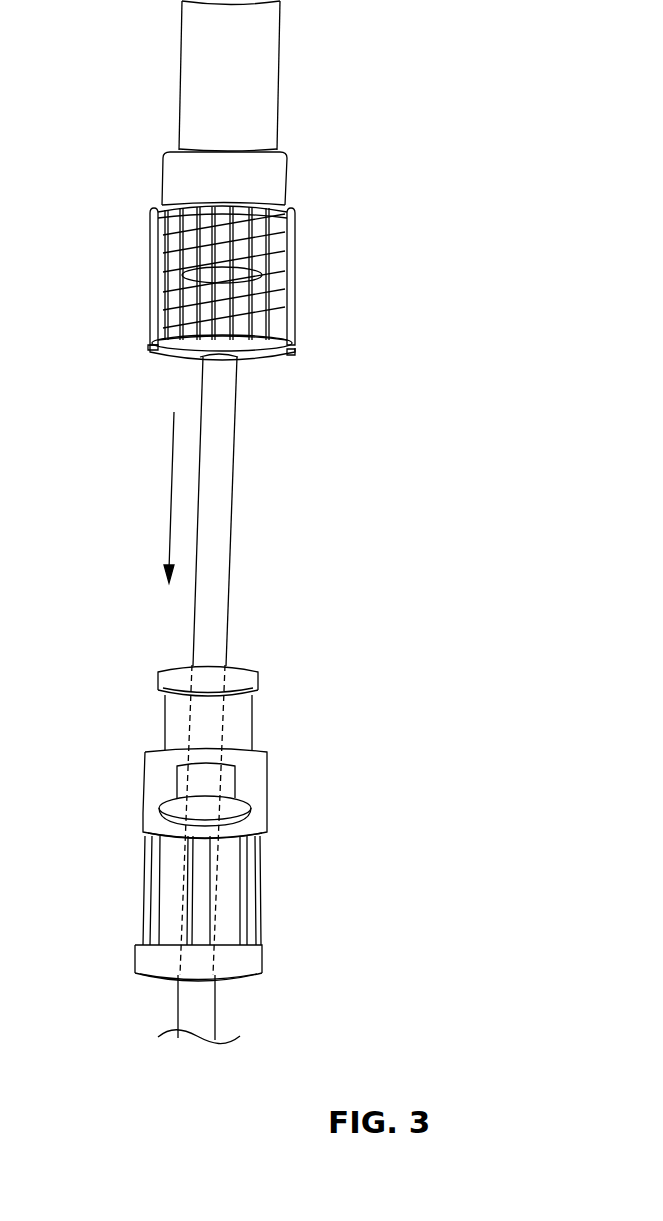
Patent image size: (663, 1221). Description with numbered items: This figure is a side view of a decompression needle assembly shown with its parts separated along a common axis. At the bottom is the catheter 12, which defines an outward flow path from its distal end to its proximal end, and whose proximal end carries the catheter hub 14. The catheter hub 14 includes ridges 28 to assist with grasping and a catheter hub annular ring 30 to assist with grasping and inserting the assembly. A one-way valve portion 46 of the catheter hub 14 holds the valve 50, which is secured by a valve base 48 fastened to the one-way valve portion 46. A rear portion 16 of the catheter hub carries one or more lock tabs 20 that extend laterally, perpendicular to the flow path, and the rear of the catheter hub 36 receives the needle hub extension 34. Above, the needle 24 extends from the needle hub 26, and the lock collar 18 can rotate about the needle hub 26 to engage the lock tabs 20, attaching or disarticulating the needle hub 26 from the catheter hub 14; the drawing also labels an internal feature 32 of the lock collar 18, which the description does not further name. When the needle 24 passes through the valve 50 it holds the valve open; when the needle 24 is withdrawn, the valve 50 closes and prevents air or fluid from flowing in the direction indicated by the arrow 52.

The catheter 12 is at (197, 1019).
The catheter hub 14 is at (257, 778).
The rear portion 16 is at (240, 728).
The lock collar 18 is at (257, 255).
The lock tabs 20 is at (250, 683).
The needle 24 is at (227, 497).
The needle hub 26 is at (260, 80).
The ridges 28 is at (252, 892).
The catheter hub annular ring 30 is at (257, 963).
The helical element 32 is at (243, 242).
The needle hub extension 34 is at (277, 360).
The rear of the catheter hub 36 is at (243, 665).
The one-way valve portion 46 is at (145, 820).
The valve base 48 is at (168, 803).
The valve 50 is at (207, 770).
The direction of flow 52 is at (172, 490).